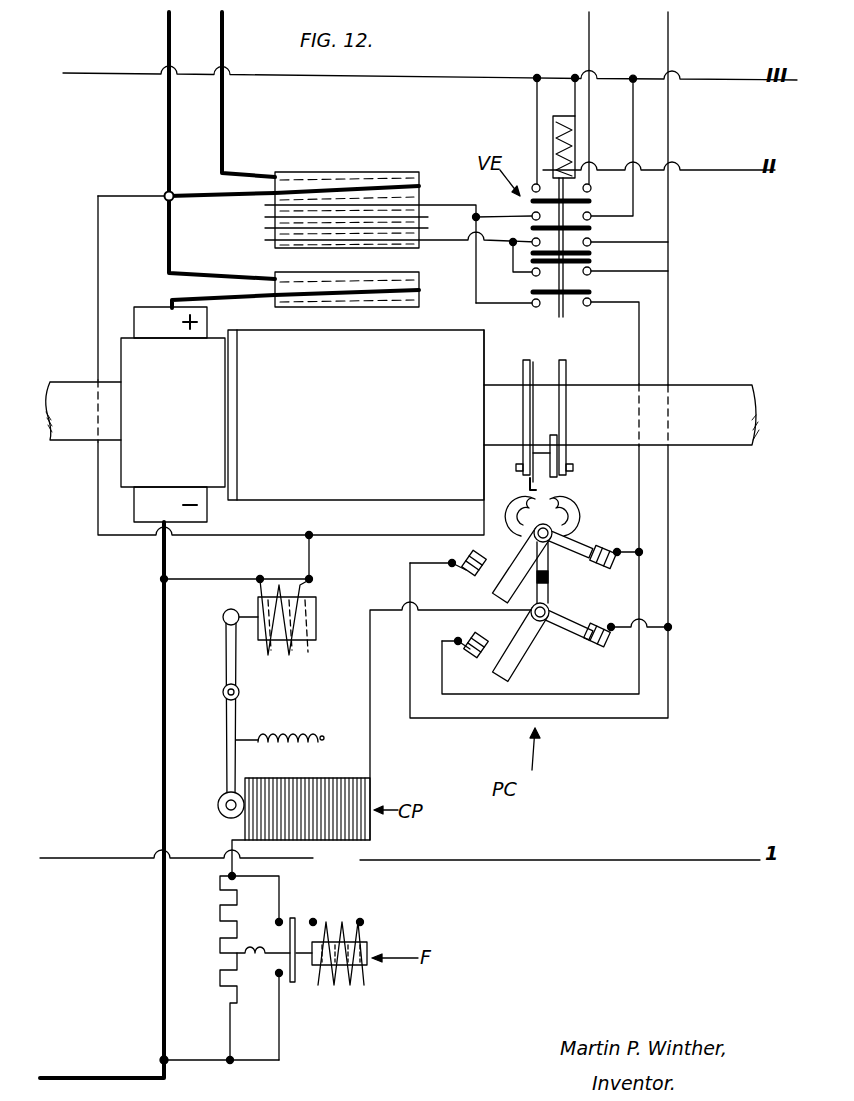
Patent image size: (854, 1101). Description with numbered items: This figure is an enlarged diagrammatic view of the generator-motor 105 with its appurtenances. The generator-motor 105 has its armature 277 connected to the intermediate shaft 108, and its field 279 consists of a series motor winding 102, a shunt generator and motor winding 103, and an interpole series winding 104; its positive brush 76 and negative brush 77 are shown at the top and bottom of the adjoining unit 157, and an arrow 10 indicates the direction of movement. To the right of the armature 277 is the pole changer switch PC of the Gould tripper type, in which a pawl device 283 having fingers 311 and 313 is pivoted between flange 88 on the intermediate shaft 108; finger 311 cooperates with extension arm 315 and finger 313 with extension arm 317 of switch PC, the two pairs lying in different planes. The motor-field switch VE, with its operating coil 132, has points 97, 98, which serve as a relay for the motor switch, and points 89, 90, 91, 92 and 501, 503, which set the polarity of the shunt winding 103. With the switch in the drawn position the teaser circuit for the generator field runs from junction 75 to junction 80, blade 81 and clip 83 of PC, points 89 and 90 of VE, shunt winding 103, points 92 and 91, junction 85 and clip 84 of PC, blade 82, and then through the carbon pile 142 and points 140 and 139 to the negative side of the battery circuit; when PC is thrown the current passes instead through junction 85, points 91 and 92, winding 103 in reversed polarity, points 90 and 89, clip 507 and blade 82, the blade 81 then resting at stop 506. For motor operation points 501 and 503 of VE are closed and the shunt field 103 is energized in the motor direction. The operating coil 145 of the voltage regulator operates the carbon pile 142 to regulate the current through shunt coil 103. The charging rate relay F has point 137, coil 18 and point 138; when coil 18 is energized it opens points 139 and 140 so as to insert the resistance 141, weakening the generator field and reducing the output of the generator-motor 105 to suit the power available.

The direction arrow 10 is at (546, 318).
The coil of charging rate relay F 18 is at (332, 975).
The junction 75 is at (165, 194).
The positive brush 76 is at (160, 310).
The negative brush 77 is at (134, 508).
The junction 80 is at (309, 536).
The blade of pole changer PC 81 is at (560, 566).
The blade of switch PC 82 is at (556, 634).
The clip of switch PC 83 is at (640, 557).
The clip of pole changer PC 84 is at (610, 645).
The junction of switch PC 85 is at (670, 630).
The flange 88 is at (562, 360).
The point of motor-field switch VE 89 is at (590, 306).
The point of switch VE 90 is at (532, 302).
The point of switch VE 91 is at (590, 274).
The point of switch VE 92 is at (528, 274).
The point of switch VE 97 is at (591, 189).
The point of switch VE 98 is at (533, 185).
The series motor winding 102 is at (419, 186).
The shunt generator and motor winding 103 is at (265, 232).
The interpole series winding 104 is at (442, 278).
The generator-motor 105 is at (300, 502).
The intermediate shaft 108 is at (70, 428).
The relay coil 132 is at (553, 134).
The point on charging rate relay F 137 is at (362, 920).
The point of relay F 138 is at (314, 920).
The point of relay F 139 is at (278, 976).
The point of relay F 140 is at (277, 918).
The resistance 141 is at (220, 942).
The carbon pile 142 is at (280, 790).
The operating coil of voltage regulator 145 is at (284, 650).
The generator 157 is at (190, 425).
The armature 277 is at (350, 476).
The field 279 is at (332, 170).
The pawl device 283 is at (540, 452).
The finger 311 is at (557, 437).
The finger 313 is at (528, 488).
The extension arm 315 is at (558, 488).
The extension arm 317 is at (505, 498).
The point of switch VE 501 is at (532, 240).
The point of switch VE 503 is at (530, 212).
The stop 506 is at (468, 570).
The clip of switch PC 507 is at (472, 655).